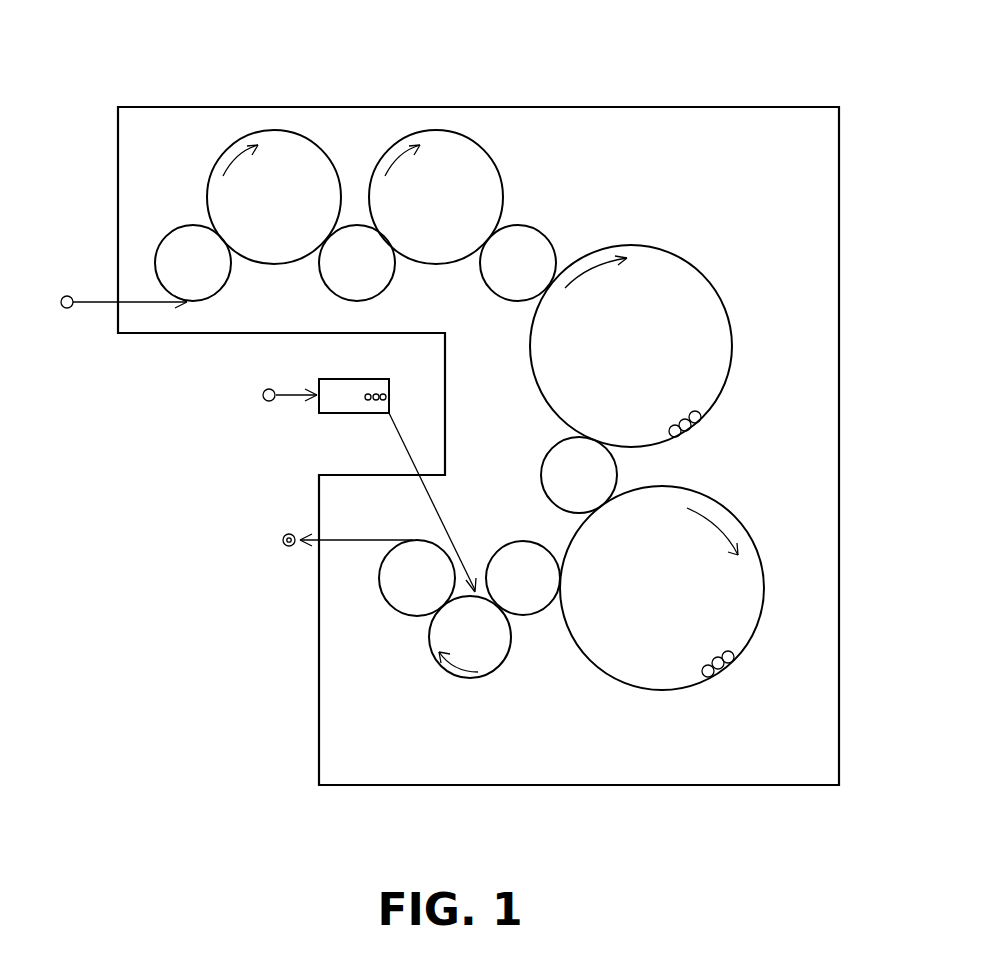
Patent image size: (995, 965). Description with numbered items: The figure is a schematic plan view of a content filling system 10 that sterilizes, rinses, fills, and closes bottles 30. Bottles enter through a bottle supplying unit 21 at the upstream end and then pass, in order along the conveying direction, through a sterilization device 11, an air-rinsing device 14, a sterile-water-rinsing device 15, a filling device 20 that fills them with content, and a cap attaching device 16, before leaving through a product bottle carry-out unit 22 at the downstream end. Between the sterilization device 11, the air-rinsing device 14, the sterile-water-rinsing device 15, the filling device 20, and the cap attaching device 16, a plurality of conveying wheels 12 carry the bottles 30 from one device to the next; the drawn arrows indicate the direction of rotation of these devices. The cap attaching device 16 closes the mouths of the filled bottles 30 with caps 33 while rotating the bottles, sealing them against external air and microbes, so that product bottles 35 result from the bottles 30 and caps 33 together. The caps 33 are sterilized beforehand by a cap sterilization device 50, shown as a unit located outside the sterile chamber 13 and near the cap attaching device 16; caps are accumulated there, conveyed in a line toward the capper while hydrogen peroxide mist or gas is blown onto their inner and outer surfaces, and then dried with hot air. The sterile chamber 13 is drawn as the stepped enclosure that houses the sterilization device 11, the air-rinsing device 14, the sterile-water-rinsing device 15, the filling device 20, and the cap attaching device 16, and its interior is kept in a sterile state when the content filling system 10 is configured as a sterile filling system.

The content filling system 10 is at (644, 78).
The sterilization device 11 is at (300, 142).
The conveying wheels 12 is at (170, 252).
The sterile chamber 13 is at (537, 107).
The air-rinsing device 14 is at (441, 135).
The sterile-water-rinsing device 15 is at (675, 262).
The cap attaching device 16 is at (433, 638).
The filling device 20 is at (752, 585).
The bottle supplying unit 21 is at (118, 307).
The product bottle carry-out unit 22 is at (316, 536).
The bottles 30 is at (67, 295).
The caps 33 is at (269, 402).
The product bottles 35 is at (305, 625).
The cap sterilization device 50 is at (340, 414).